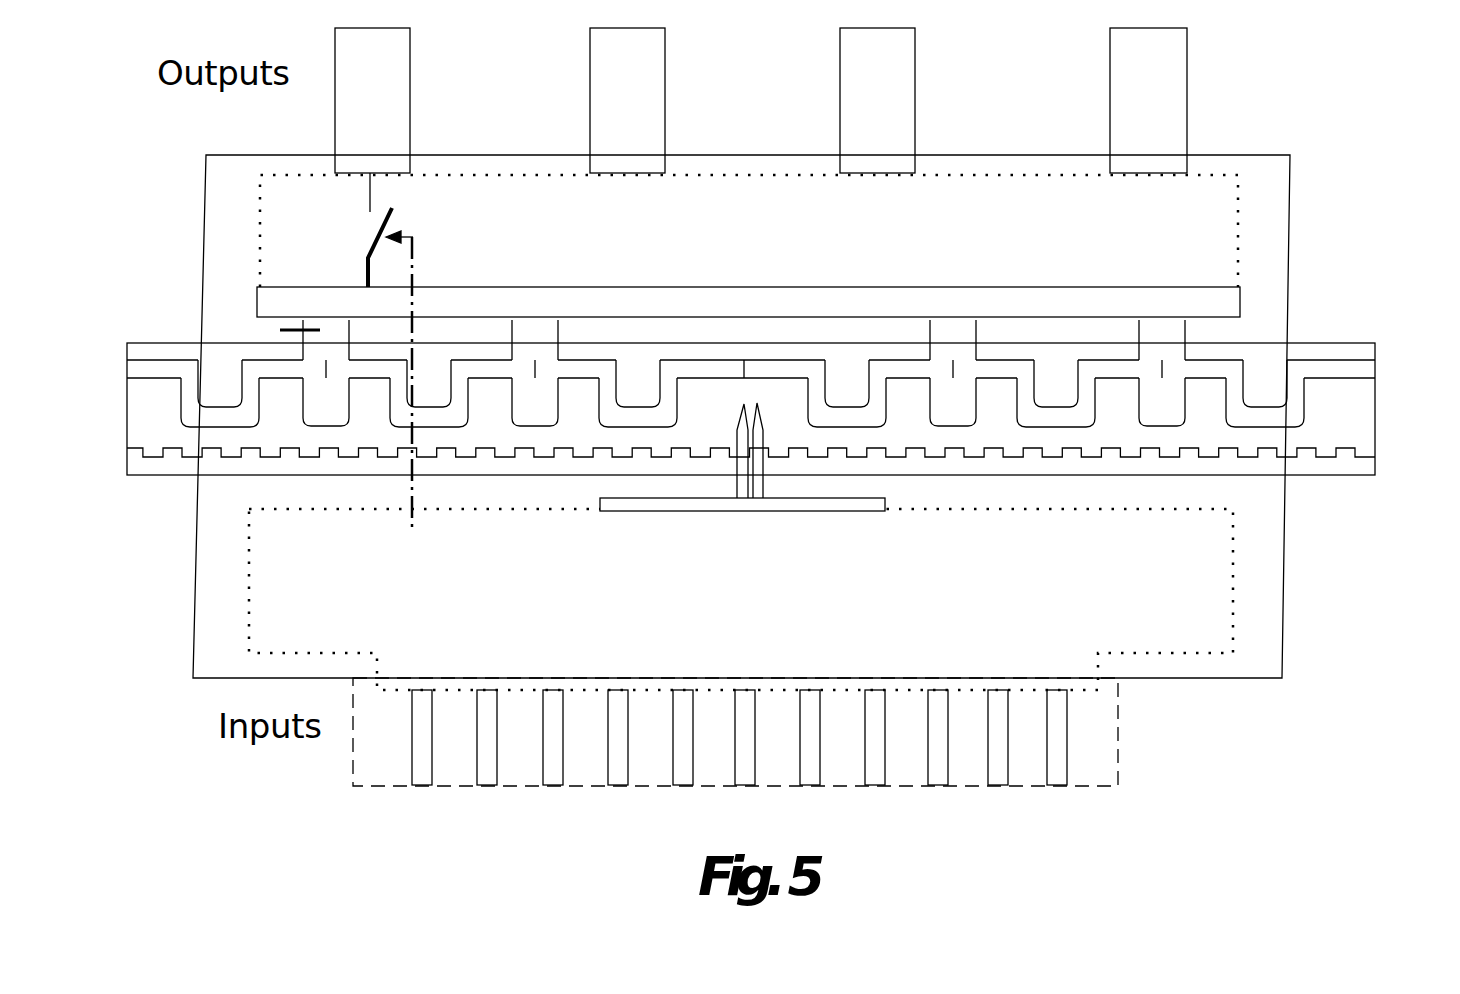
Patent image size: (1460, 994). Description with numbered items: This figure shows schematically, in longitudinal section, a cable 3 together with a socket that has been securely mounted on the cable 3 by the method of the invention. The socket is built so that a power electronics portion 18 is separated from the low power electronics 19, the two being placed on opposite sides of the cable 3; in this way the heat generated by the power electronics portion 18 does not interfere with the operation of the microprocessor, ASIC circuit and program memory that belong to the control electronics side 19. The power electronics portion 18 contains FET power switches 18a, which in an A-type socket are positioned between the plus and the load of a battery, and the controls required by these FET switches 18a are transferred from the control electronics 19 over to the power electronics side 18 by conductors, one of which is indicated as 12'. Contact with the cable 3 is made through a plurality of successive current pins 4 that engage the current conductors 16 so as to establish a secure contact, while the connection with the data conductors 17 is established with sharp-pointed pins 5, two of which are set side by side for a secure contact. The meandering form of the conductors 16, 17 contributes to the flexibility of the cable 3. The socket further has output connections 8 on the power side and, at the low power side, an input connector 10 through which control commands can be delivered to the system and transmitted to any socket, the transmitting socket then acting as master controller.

The cable 3 is at (1355, 410).
The current pins 4 is at (290, 330).
The sharp-pointed pins 5 is at (760, 480).
The output connectors 8 is at (392, 77).
The input connector 10 is at (1095, 740).
The conductor / partition line 12' is at (260, 382).
The current conductors 16 is at (1345, 367).
The data conductors 17 is at (1345, 457).
The power electronics portion 18 is at (282, 193).
The power switches 18a is at (375, 227).
The low power electronics 19 is at (282, 538).